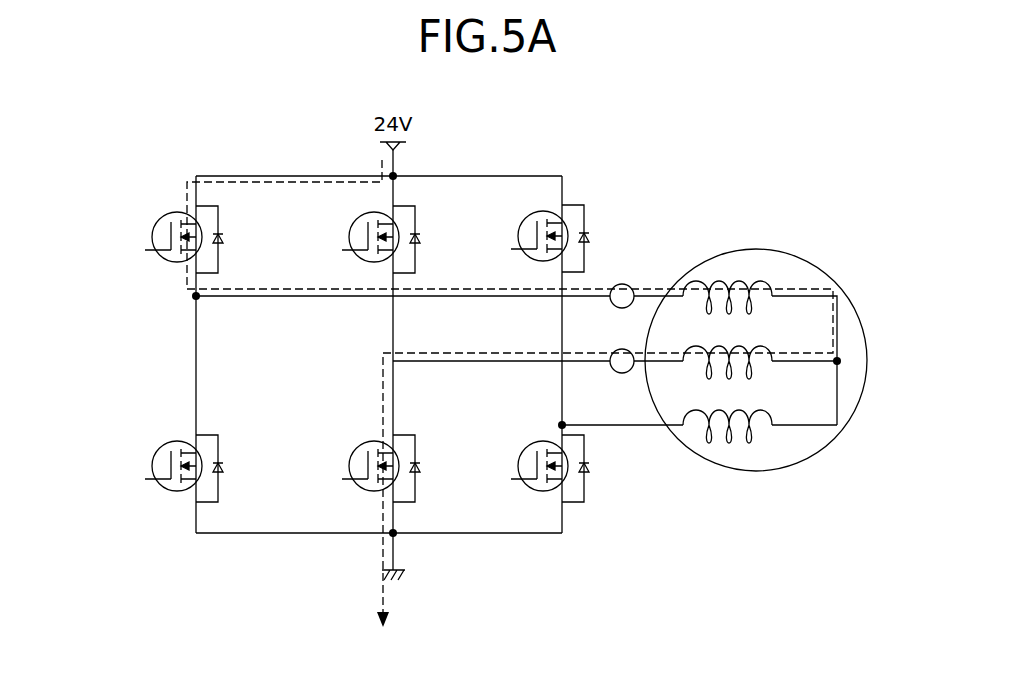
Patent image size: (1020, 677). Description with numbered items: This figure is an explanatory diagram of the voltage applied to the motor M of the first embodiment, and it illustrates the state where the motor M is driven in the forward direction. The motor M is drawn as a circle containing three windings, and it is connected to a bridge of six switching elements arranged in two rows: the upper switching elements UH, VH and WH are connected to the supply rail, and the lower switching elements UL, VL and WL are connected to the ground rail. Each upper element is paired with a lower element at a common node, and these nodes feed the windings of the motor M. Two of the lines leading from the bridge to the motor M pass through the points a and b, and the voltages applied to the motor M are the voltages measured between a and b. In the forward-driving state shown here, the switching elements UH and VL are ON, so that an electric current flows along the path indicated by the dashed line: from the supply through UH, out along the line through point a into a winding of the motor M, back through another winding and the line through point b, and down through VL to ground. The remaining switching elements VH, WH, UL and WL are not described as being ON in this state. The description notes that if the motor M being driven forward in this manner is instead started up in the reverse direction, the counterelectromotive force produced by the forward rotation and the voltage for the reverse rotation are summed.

The element UH is at (166, 239).
The element VH is at (363, 239).
The element WH is at (529, 238).
The element UL is at (168, 468).
The element VL is at (365, 468).
The element WL is at (531, 468).
The point a is at (622, 310).
The point b is at (622, 375).
The motor M is at (818, 263).